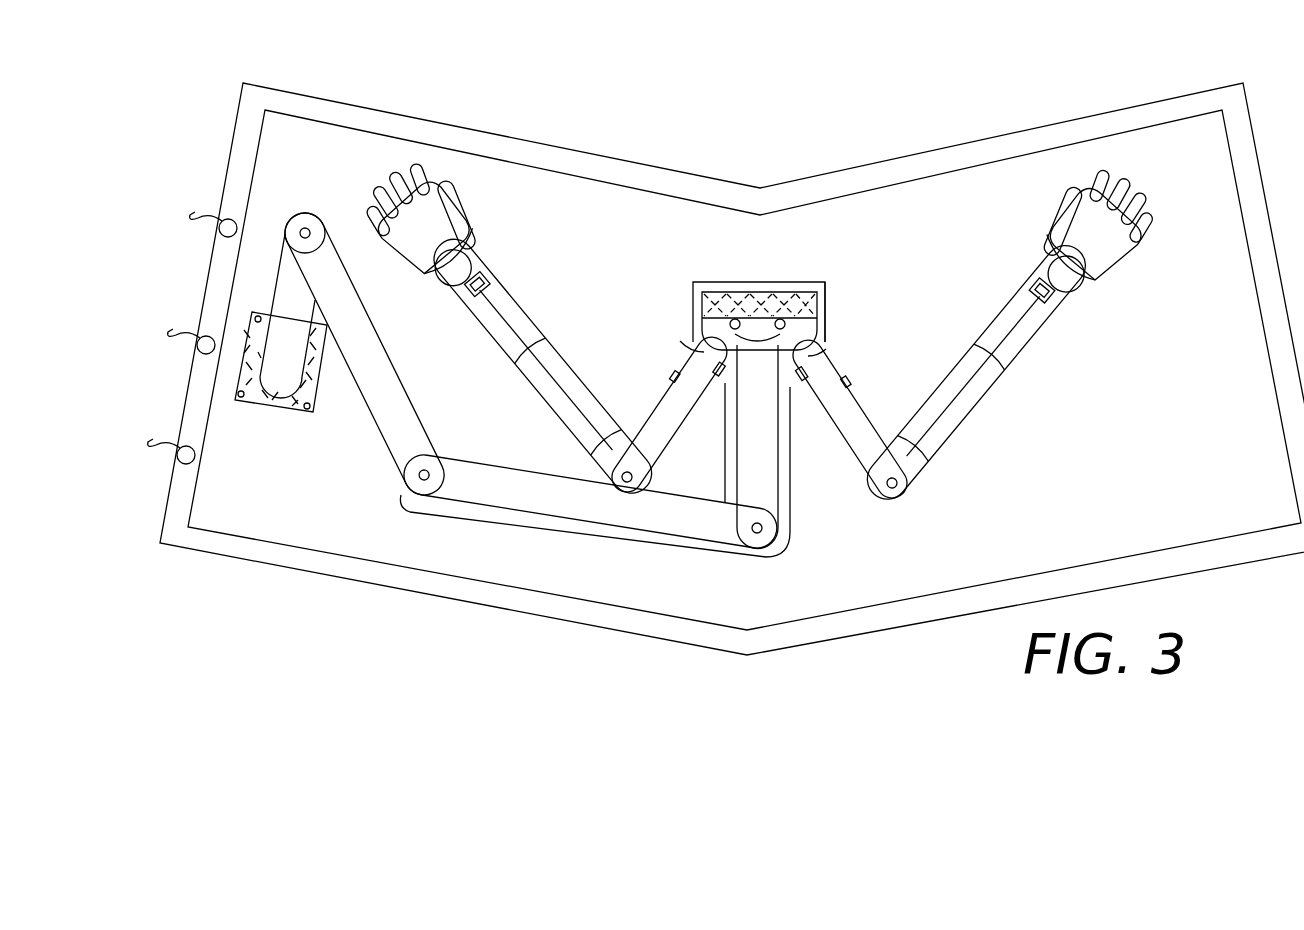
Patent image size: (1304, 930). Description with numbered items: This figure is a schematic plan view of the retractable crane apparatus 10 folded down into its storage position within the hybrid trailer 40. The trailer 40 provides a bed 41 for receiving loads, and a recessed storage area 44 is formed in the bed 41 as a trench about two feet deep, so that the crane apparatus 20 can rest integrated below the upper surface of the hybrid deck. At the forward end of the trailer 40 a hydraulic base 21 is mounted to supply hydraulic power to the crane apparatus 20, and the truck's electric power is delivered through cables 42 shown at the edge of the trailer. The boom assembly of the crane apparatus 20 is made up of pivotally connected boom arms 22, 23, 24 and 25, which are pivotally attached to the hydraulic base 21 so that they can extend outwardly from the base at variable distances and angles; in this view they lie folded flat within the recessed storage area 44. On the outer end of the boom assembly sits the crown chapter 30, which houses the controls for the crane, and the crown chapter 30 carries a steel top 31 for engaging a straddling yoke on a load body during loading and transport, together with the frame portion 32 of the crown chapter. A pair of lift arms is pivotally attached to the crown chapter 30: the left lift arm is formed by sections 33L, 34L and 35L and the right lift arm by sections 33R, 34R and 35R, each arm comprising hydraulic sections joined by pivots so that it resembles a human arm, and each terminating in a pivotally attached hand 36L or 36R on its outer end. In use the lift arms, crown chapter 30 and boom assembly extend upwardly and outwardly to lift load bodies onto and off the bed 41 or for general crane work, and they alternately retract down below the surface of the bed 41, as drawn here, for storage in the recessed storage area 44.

The retractable crane apparatus 10 is at (759, 347).
The crane apparatus 20 is at (293, 216).
The hydraulic base 21 is at (277, 407).
The boom arm 22 is at (275, 295).
The boom arm 23 is at (362, 402).
The boom arm 24 is at (530, 500).
The boom arm 25 is at (780, 503).
The crown chapter 30 is at (757, 288).
The steel top 31 is at (778, 300).
The head frame 32 is at (825, 340).
The right lift arm section 33R is at (680, 341).
The left lift arm section 33L is at (826, 349).
The right lift arm section 34R is at (637, 417).
The left lift arm section 34L is at (863, 418).
The right lift arm section 35R is at (517, 330).
The left lift arm section 35L is at (1001, 337).
The right hand 36R is at (450, 244).
The left hand 36L is at (1072, 245).
The hybrid trailer 40 is at (286, 77).
The bed 41 is at (744, 190).
The cables 42 is at (195, 345).
The recessed storage area 44 is at (880, 505).